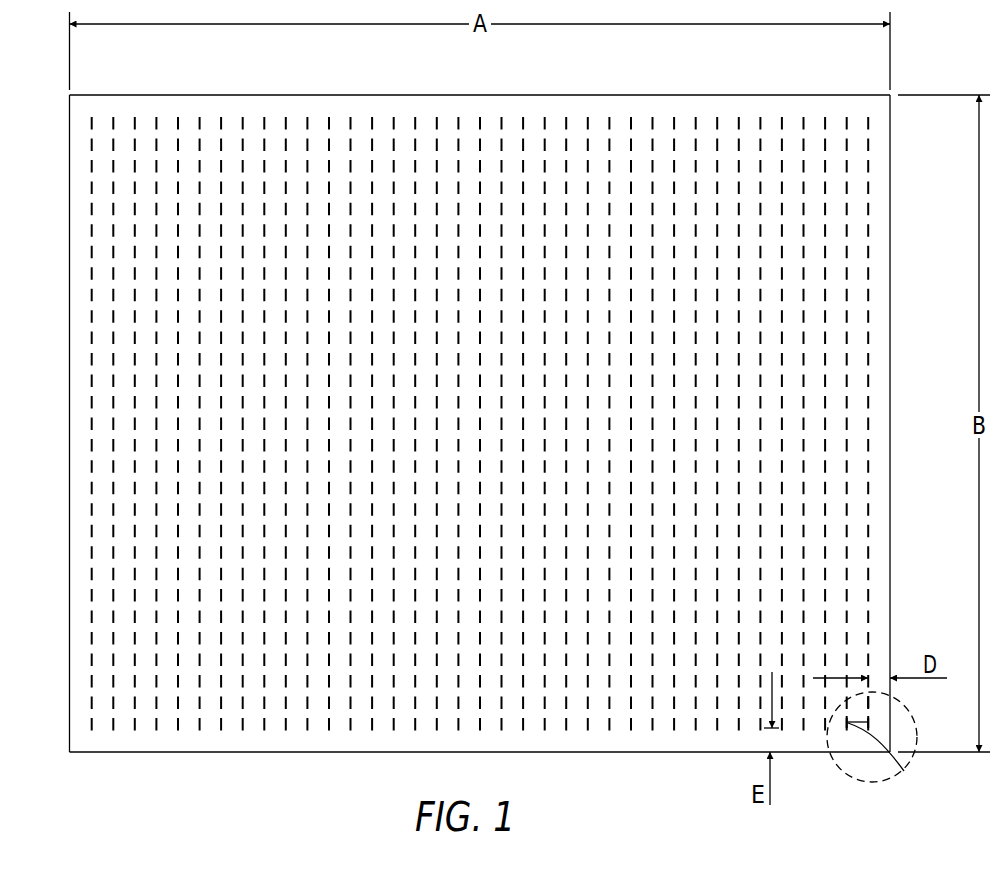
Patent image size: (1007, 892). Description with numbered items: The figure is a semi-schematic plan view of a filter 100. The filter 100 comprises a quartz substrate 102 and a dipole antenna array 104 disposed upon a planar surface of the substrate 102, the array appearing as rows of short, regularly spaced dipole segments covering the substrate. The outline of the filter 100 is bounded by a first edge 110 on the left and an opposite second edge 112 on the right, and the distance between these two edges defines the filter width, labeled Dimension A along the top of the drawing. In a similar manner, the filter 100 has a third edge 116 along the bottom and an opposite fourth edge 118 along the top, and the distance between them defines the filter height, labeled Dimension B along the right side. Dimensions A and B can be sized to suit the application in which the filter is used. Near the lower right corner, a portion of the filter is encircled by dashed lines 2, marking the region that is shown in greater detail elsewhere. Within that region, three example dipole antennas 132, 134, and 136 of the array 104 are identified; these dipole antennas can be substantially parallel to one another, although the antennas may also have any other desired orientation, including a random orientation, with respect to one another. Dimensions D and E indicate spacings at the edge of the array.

The filter 100 is at (480, 442).
The quartz substrate 102 is at (631, 733).
The dipole antenna array 104 is at (685, 730).
The first edge 110 is at (70, 712).
The second edge 112 is at (890, 145).
The third edge 116 is at (147, 752).
The fourth edge 118 is at (793, 95).
The dipole antenna 132 is at (868, 702).
The dipole antenna 134 is at (868, 722).
The dipole antenna 136 is at (904, 771).
The dashed lines 2 is at (896, 777).